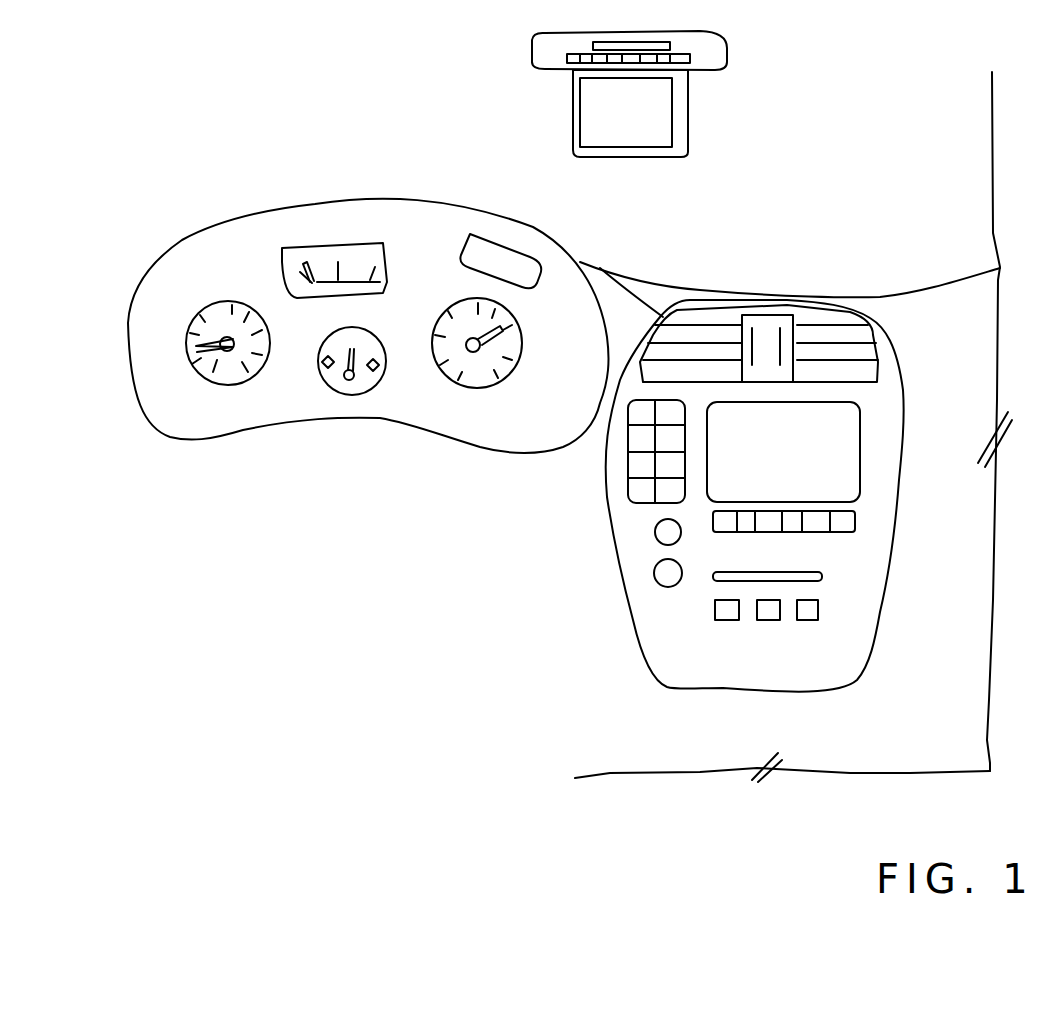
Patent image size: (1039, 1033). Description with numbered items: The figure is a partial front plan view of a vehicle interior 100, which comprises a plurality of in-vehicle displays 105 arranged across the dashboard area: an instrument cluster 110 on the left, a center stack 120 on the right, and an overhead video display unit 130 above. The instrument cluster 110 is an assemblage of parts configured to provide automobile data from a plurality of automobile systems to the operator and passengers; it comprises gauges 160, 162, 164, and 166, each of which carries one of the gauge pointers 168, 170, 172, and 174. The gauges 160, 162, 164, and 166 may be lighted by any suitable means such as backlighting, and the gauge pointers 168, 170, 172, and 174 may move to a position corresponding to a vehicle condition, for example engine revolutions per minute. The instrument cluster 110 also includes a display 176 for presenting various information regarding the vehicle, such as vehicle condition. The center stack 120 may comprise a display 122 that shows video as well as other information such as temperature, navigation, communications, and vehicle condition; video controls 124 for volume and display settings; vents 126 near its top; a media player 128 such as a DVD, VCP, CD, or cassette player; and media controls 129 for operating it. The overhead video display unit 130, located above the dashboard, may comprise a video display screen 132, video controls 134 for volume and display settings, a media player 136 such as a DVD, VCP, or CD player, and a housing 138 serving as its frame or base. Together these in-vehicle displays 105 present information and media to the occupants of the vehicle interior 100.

The vehicle interior 100 is at (928, 64).
The in-vehicle displays 105 is at (218, 128).
The instrument cluster 110 is at (340, 198).
The center stack 120 is at (905, 397).
The display 122 is at (855, 480).
The video controls 124 is at (682, 542).
The vents 126 is at (872, 340).
The media player 128 is at (820, 580).
The media controls 129 is at (769, 622).
The overhead video display unit 130 is at (727, 50).
The video display screen 132 is at (685, 120).
The video controls 134 is at (690, 62).
The media player 136 is at (665, 43).
The housing 138 is at (533, 70).
The gauge 160 is at (209, 309).
The gauge 162 is at (497, 403).
The gauge 164 is at (366, 215).
The gauge 166 is at (374, 397).
The gauge pointer 168 is at (222, 340).
The gauge pointer 170 is at (346, 380).
The gauge pointer 172 is at (480, 350).
The gauge pointer 174 is at (314, 281).
The display 176 is at (500, 237).